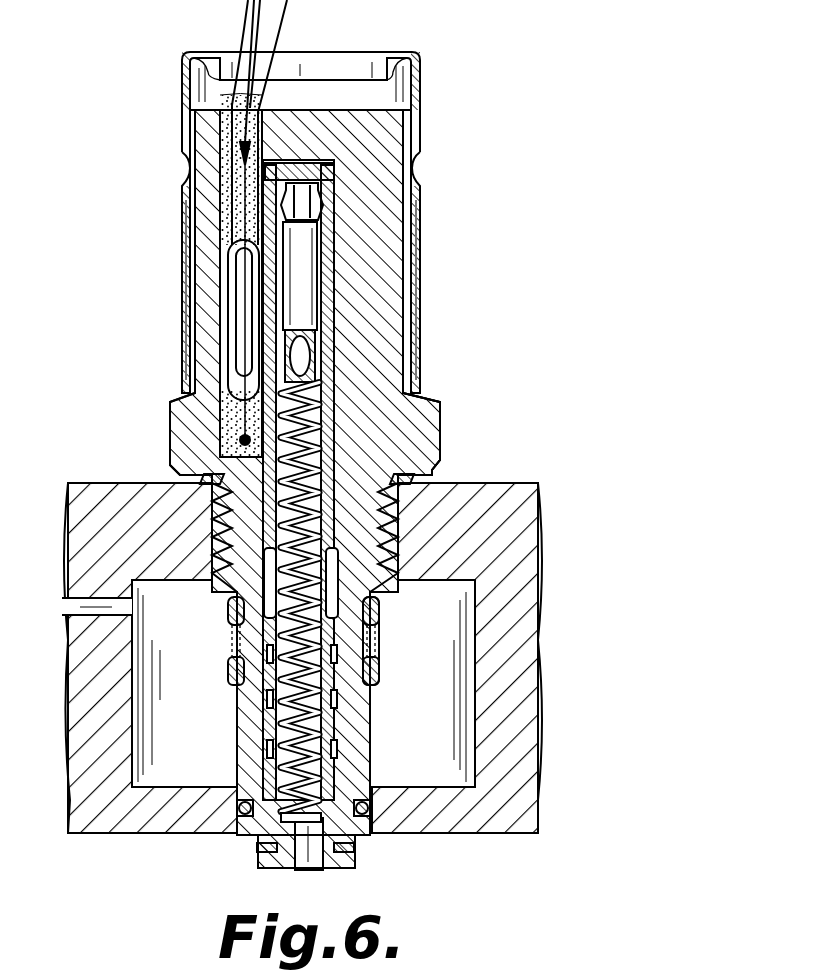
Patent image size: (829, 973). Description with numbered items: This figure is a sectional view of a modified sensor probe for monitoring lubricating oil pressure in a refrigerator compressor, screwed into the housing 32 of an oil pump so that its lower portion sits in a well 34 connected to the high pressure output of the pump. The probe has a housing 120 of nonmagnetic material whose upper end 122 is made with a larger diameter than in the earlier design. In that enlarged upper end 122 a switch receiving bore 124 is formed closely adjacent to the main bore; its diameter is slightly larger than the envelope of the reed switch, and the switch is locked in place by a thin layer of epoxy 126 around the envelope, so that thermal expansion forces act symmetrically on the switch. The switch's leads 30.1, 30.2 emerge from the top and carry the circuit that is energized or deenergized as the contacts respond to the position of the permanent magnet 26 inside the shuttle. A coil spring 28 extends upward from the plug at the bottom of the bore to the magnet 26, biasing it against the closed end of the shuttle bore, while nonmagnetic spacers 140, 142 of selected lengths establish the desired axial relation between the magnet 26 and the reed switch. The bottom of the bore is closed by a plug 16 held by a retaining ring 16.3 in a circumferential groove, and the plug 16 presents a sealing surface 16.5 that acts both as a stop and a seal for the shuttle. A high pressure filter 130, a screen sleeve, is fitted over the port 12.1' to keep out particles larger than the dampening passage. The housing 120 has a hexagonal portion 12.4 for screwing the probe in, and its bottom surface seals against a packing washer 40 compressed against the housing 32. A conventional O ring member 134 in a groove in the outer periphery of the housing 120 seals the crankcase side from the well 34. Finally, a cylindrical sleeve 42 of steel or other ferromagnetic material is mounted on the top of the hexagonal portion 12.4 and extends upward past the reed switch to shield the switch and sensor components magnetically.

The port 12.1' is at (314, 641).
The hexagonal portion 12.4 is at (442, 447).
The plug 16 is at (330, 877).
The retaining ring 16.3 is at (352, 853).
The sealing surface 16.5 is at (360, 802).
The permanent magnet 26 is at (306, 260).
The coil spring 28 is at (288, 690).
The lead 30.1 is at (283, 38).
The lead 30.2 is at (247, 30).
The housing of oil pump 32 is at (130, 480).
The well 34 is at (208, 785).
The packing washer 40 is at (410, 486).
The cylindrical sleeve 42 is at (422, 303).
The housing 120 is at (389, 252).
The upper end 122 is at (393, 134).
The switch receiving bore 124 is at (228, 106).
The epoxy 126 is at (236, 172).
The high pressure filter 130 is at (372, 684).
The O ring member 134 is at (243, 832).
The spacer 140 is at (310, 203).
The spacer 142 is at (303, 352).